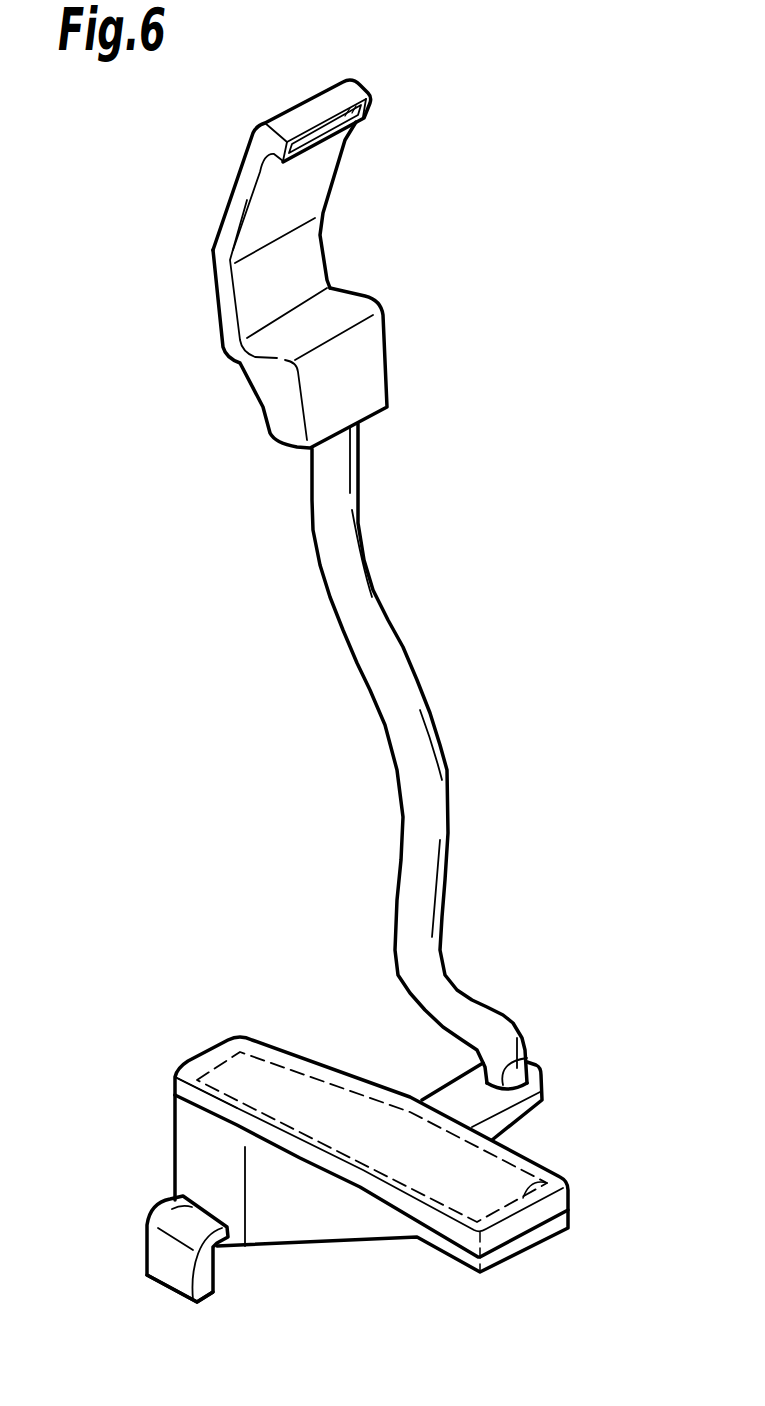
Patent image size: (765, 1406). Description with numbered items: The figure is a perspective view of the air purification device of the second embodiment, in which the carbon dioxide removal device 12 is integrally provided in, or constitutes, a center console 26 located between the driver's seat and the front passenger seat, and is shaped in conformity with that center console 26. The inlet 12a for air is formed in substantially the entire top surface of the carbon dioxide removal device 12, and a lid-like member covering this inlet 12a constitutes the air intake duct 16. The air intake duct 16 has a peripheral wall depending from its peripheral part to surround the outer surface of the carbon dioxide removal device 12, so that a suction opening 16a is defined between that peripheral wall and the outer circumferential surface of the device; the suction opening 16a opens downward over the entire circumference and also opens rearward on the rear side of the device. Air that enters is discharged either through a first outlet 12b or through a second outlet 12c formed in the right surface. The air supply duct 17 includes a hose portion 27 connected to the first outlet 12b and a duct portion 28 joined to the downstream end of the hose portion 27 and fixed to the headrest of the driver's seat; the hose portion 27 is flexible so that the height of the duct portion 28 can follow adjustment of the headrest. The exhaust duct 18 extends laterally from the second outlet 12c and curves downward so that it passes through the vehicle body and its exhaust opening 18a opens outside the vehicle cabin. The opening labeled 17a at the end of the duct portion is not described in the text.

The carbon dioxide removal device 12 is at (362, 1222).
The inlet 12a is at (523, 1198).
The first outlet 12b is at (523, 1060).
The second outlet 12c is at (167, 1208).
The air intake duct 16 is at (237, 1053).
The suction opening 16a is at (203, 1117).
The air supply duct 17 is at (250, 158).
The engagement hole 17a is at (368, 115).
The exhaust duct 18 is at (157, 1253).
The exhaust opening 18a is at (203, 1303).
The center console 26 is at (333, 1082).
The hose portion 27 is at (365, 660).
The duct portion 28 is at (213, 287).